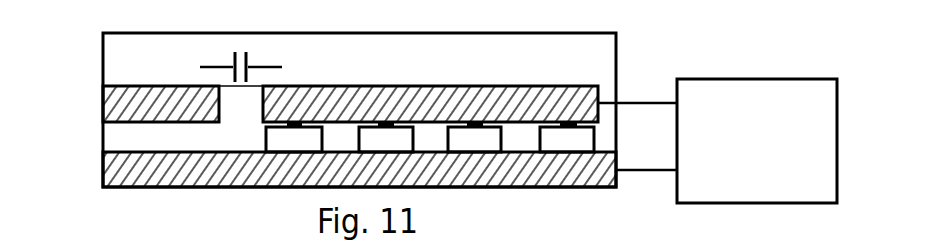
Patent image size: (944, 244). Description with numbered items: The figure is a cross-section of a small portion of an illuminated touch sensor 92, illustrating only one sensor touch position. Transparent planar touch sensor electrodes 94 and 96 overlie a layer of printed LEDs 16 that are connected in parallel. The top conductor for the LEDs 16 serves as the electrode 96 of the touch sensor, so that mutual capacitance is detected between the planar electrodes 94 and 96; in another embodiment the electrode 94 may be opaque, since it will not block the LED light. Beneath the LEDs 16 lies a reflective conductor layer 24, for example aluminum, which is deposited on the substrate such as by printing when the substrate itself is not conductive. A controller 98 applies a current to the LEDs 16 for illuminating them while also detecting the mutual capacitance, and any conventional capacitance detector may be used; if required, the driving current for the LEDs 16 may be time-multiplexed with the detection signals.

The illuminated touch sensor 92 is at (658, 61).
The planar touch sensor electrode 94 is at (162, 86).
The planar touch sensor electrode 96 is at (447, 86).
The printed LEDs 16 is at (265, 138).
The reflective conductor layer 24 is at (102, 172).
The controller 98 is at (755, 78).